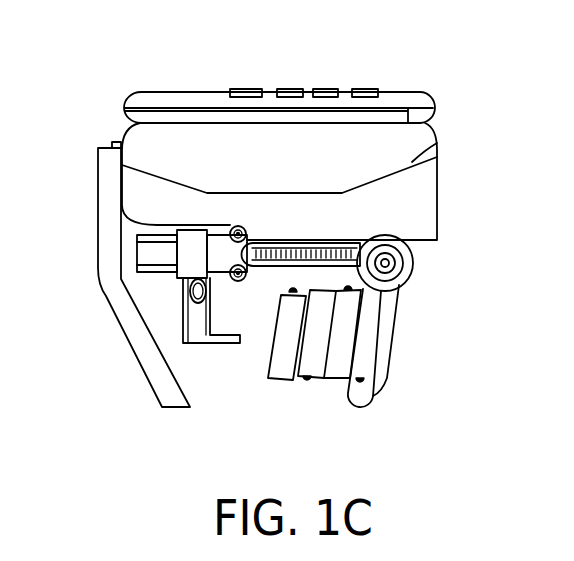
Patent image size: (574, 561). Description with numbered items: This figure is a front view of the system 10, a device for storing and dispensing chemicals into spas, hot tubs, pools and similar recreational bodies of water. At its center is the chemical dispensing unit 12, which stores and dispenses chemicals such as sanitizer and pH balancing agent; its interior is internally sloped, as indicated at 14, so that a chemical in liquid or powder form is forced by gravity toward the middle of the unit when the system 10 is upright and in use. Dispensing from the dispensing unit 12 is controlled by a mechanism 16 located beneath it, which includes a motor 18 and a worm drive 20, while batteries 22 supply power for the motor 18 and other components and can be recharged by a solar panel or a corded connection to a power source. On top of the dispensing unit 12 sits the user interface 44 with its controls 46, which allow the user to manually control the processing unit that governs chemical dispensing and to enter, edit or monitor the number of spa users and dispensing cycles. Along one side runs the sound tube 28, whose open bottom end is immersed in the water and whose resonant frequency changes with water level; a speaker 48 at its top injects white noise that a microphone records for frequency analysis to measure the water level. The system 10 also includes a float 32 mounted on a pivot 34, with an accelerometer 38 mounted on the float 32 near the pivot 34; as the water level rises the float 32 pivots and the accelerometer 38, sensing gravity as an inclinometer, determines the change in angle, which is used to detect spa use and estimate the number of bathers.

The system 10 is at (281, 38).
The chemical dispensing unit 12 is at (428, 197).
The internal slope 14 is at (400, 173).
The mechanism 16 is at (260, 264).
The motor 18 is at (153, 252).
The worm drive 20 is at (298, 264).
The batteries 22 is at (287, 357).
The sound tube 28 is at (107, 188).
The float 32 is at (378, 364).
The pivot 34 is at (402, 264).
The accelerometer 38 is at (393, 262).
The user interface 44 is at (400, 92).
The controls 46 is at (367, 90).
The speaker 48 is at (113, 142).